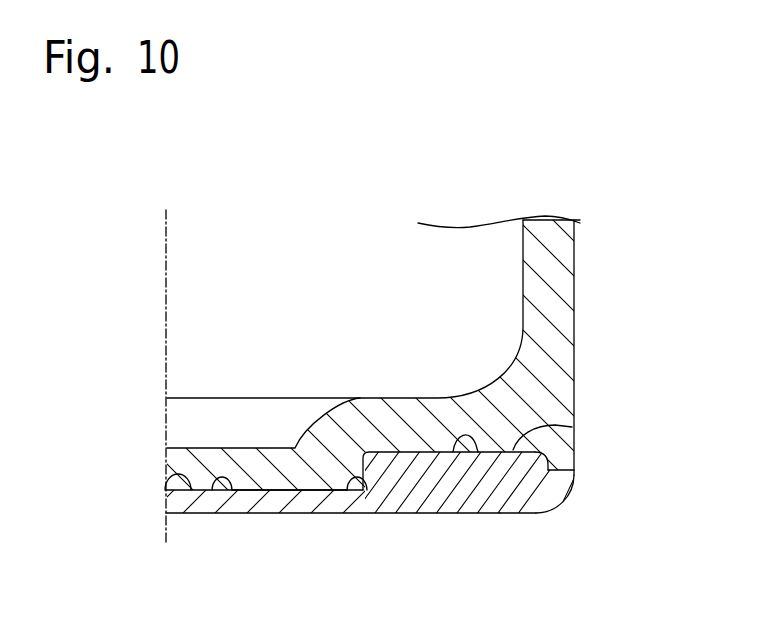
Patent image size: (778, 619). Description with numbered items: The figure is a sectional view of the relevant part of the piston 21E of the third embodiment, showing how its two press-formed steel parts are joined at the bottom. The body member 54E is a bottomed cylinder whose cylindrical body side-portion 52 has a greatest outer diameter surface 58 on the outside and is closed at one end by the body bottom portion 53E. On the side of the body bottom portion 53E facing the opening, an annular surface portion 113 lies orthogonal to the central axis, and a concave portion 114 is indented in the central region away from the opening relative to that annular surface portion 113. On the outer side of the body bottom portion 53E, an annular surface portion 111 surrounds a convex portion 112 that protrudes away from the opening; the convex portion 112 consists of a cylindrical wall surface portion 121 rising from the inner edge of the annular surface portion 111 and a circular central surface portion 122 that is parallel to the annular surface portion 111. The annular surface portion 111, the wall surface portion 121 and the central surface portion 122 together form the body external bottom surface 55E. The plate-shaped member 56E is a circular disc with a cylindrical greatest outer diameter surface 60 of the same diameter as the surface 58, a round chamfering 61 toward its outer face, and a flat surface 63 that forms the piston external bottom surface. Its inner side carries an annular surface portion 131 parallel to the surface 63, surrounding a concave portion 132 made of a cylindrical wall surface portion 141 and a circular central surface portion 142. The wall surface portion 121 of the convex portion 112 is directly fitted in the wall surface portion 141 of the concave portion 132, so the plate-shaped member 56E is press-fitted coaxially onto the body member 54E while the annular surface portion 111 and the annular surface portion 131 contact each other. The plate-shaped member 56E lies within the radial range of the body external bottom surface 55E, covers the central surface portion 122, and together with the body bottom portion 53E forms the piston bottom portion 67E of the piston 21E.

The piston 21E is at (585, 192).
The greatest outer diameter surface 58 is at (576, 240).
The body member 54E is at (575, 285).
The body side-portion 52 is at (557, 317).
The annular surface portion 131 is at (572, 427).
The greatest outer diameter surface 60 is at (575, 457).
The body external bottom surface 55E is at (548, 470).
The round chamfering 61 is at (566, 497).
The piston bottom portion 67E is at (539, 493).
The concave portion 132 is at (164, 476).
The central surface portion 142 is at (213, 490).
The convex portion 112 is at (262, 490).
The central surface portion 122 is at (303, 490).
The wall surface portion 141 is at (350, 490).
The wall surface portion 121 is at (374, 472).
The surface 63 is at (397, 513).
The plate-shaped member 56E is at (449, 493).
The annular surface portion 111 is at (478, 452).
The body bottom portion 53E is at (480, 452).
The annular surface portion 113 is at (413, 398).
The concave portion 114 is at (247, 448).